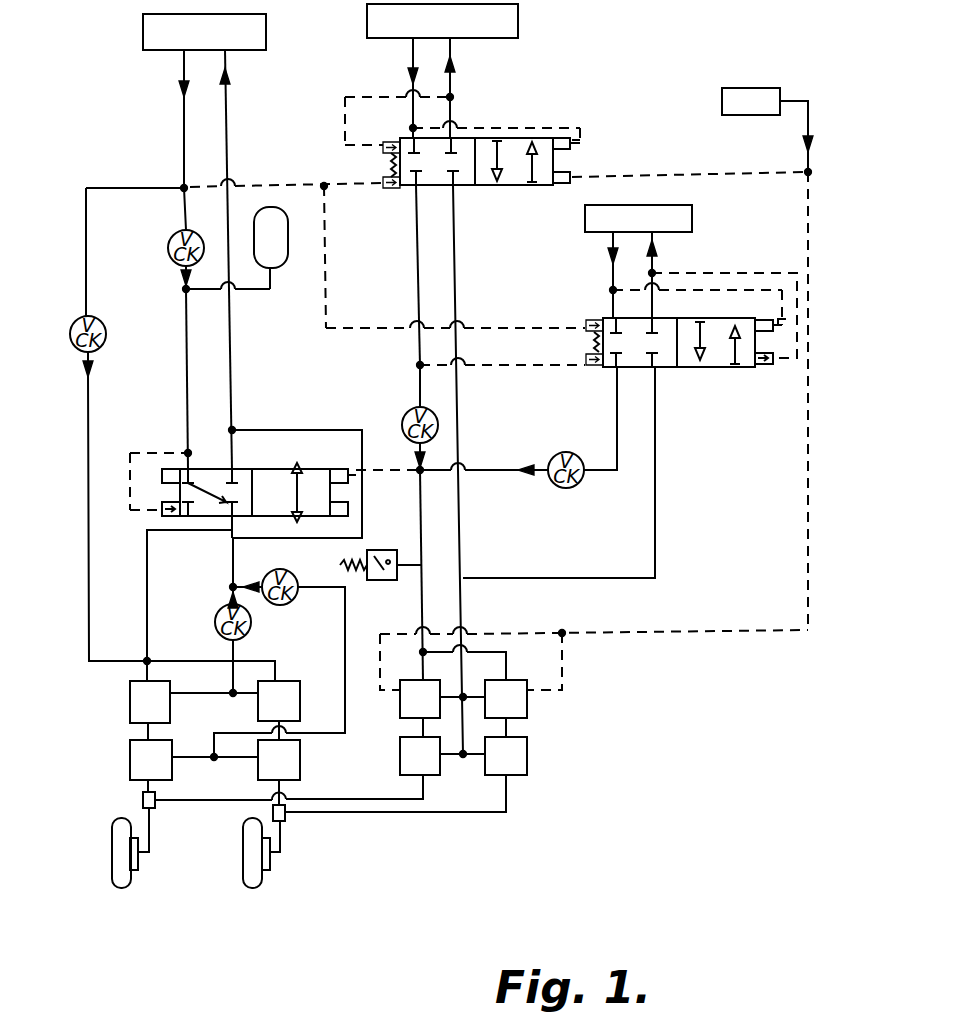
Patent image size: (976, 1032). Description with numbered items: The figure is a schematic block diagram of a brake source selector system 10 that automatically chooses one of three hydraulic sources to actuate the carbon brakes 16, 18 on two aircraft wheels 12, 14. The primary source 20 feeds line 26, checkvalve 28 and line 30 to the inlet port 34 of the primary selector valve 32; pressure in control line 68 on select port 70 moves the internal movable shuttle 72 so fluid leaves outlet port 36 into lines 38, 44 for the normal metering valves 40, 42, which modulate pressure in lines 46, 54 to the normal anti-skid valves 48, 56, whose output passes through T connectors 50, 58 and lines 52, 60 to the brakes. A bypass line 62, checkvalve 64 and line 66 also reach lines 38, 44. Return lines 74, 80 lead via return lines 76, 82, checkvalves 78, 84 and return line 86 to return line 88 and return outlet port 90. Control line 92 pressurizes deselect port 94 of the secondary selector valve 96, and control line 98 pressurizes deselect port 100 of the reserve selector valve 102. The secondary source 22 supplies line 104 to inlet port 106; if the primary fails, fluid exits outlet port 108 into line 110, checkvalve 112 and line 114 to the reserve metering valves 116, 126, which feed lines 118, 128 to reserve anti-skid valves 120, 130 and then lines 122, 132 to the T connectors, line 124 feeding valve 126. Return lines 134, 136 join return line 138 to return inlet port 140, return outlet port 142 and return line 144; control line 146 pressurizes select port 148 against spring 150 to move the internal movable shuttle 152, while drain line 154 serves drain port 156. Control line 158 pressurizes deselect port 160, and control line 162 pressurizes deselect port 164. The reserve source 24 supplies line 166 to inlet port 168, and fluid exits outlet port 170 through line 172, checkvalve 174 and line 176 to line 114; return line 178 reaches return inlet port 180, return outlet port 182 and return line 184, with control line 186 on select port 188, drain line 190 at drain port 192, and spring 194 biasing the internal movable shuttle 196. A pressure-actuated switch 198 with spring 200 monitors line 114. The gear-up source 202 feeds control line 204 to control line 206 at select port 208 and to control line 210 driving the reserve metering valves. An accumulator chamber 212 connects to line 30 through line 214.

The brake source selector system 10 is at (133, 166).
The wheel 12 is at (110, 844).
The wheel 14 is at (242, 848).
The carbon brake 16 is at (140, 868).
The carbon brake 18 is at (270, 868).
The primary source 20 is at (143, 38).
The secondary source 22 is at (367, 22).
The reserve source 24 is at (585, 232).
The line 26 is at (183, 110).
The checkvalve 28 is at (176, 238).
The line 30 is at (186, 328).
The primary selector valve 32 is at (304, 469).
The inlet port 34 is at (188, 470).
The outlet port 36 is at (238, 522).
The line 38 is at (146, 600).
The normal metering valve 40 is at (130, 694).
The normal metering valve 42 is at (286, 682).
The line 44 is at (262, 660).
The line 46 is at (138, 726).
The normal anti-skid valve 48 is at (130, 764).
The T connector 50 is at (140, 800).
The line 52 is at (154, 820).
The line 54 is at (286, 720).
The normal anti-skid valve 56 is at (302, 758).
The T connector 58 is at (290, 814).
The line 60 is at (282, 844).
The line 62 is at (86, 278).
The checkvalve 64 is at (88, 370).
The line 66 is at (90, 416).
The control line 68 is at (140, 454).
The select port 70 is at (162, 512).
The internal movable shuttle 72 is at (304, 516).
The return line 74 is at (212, 756).
The return line 76 is at (346, 600).
The checkvalve 78 is at (270, 574).
The return line 80 is at (214, 692).
The return line 82 is at (216, 632).
The checkvalve 84 is at (216, 608).
The return line 86 is at (232, 568).
The return line 88 is at (234, 386).
The return outlet port 90 is at (238, 470).
The control line 92 is at (272, 182).
The deselect port 94 is at (398, 188).
The secondary selector valve 96 is at (456, 190).
The control line 98 is at (486, 328).
The deselect port 100 is at (586, 320).
The reserve selector valve 102 is at (668, 372).
The line 104 is at (410, 74).
The inlet port 106 is at (413, 126).
The outlet port 108 is at (416, 189).
The line 110 is at (418, 260).
The checkvalve 112 is at (408, 412).
The line 114 is at (420, 502).
The reserve metering valve 116 is at (400, 704).
The line 118 is at (422, 726).
The reserve anti-skid valve 120 is at (400, 760).
The line 122 is at (336, 798).
The line 124 is at (490, 652).
The reserve metering valve 126 is at (530, 710).
The line 128 is at (510, 728).
The reserve anti-skid valve 130 is at (530, 762).
The line 132 is at (514, 802).
The return line 134 is at (444, 764).
The return line 136 is at (448, 702).
The return line 138 is at (462, 612).
The return inlet port 140 is at (452, 191).
The return outlet port 142 is at (464, 130).
The return line 144 is at (460, 104).
The control line 146 is at (571, 128).
The select port 148 is at (572, 150).
The spring 150 is at (383, 166).
The internal movable shuttle 152 is at (525, 186).
The drain line 154 is at (344, 116).
The drain port 156 is at (383, 146).
The control line 158 is at (490, 368).
The deselect port 160 is at (595, 368).
The control line 162 is at (386, 470).
The deselect port 164 is at (345, 468).
The line 166 is at (613, 272).
The inlet port 168 is at (613, 292).
The outlet port 170 is at (617, 370).
The line 172 is at (617, 440).
The checkvalve 174 is at (562, 486).
The line 176 is at (491, 470).
The return line 178 is at (598, 578).
The return inlet port 180 is at (656, 370).
The return outlet port 182 is at (656, 318).
The return line 184 is at (652, 256).
The control line 186 is at (712, 292).
The select port 188 is at (774, 342).
The drain line 190 is at (762, 274).
The drain port 192 is at (760, 366).
The spring 194 is at (610, 343).
The internal movable shuttle 196 is at (748, 368).
The pressure-actuated switch 198 is at (400, 542).
The spring 200 is at (342, 552).
The gear-up source 202 is at (722, 104).
The control line 204 is at (804, 146).
The control line 206 is at (705, 170).
The select port 208 is at (574, 178).
The control line 210 is at (808, 540).
The accumulator chamber 212 is at (290, 266).
The line 214 is at (266, 290).